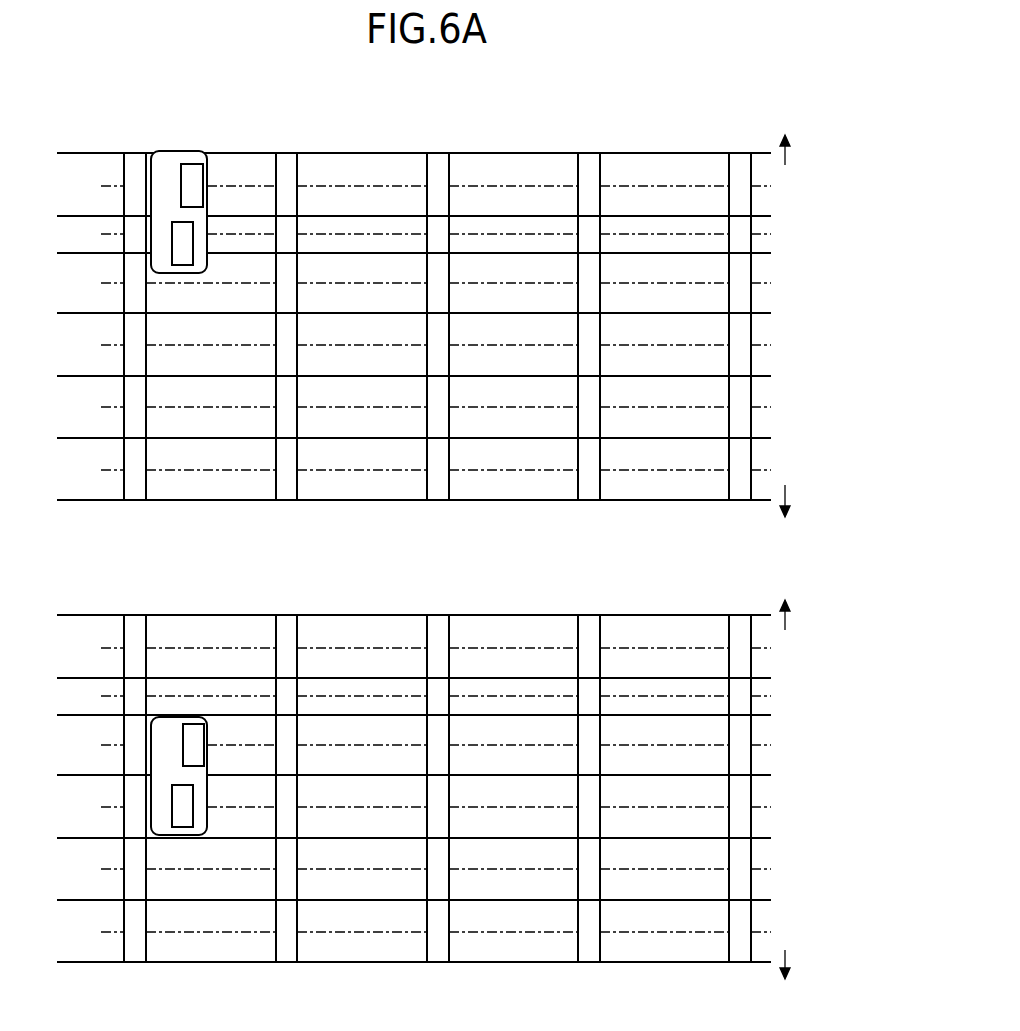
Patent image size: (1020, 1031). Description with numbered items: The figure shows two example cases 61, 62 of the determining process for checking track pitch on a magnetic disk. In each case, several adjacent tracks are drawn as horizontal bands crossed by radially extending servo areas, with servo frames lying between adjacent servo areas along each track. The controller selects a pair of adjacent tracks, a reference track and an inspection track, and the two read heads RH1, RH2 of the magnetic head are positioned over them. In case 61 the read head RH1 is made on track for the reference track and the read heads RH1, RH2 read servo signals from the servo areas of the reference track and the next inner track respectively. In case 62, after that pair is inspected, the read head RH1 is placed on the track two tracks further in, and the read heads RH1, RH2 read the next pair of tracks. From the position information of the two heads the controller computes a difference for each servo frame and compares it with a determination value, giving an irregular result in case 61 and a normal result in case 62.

The example case 61 is at (95, 120).
The example case 62 is at (95, 583).
The read head RH1 is at (192, 185).
The read head RH2 is at (182, 243).